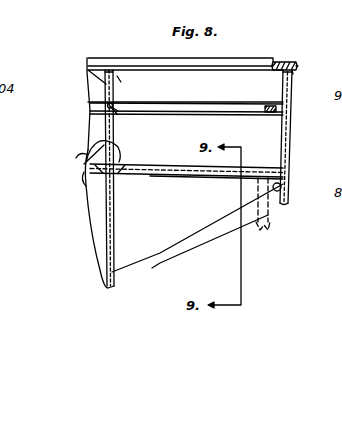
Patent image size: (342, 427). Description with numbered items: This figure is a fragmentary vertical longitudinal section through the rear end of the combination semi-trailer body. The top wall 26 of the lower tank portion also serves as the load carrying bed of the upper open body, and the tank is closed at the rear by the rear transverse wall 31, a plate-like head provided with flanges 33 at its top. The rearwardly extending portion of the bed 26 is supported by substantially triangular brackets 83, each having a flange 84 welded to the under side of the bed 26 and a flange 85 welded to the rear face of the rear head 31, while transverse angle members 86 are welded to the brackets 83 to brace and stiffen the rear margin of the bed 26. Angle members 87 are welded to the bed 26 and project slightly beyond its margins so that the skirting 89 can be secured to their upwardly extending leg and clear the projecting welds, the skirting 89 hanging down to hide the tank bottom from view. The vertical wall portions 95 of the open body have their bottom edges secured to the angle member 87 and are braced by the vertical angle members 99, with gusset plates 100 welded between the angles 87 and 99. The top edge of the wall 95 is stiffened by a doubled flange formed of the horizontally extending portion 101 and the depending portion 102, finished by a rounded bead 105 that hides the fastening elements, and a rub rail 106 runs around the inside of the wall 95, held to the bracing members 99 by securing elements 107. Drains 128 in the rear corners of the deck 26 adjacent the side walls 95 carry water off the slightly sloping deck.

The depending portion 102 is at (262, 55).
The horizontally extending portion 101 is at (284, 57).
The rounded bead 105 is at (295, 70).
The rub rail 106 is at (178, 90).
The vertical angle members 99 is at (117, 76).
The gusset plates 100 is at (92, 78).
The securing elements 107 is at (115, 110).
The vertical wall portions 95 is at (291, 126).
The flange 85 is at (114, 238).
The rear transverse wall 31 is at (110, 223).
The flanges 33 is at (95, 178).
The top wall 26 is at (171, 165).
The flange 84 is at (208, 173).
The angle members 87 is at (135, 164).
The transverse angle members 86 is at (288, 183).
The skirting 89 is at (289, 196).
The drains 128 is at (270, 219).
The brackets 83 is at (170, 236).